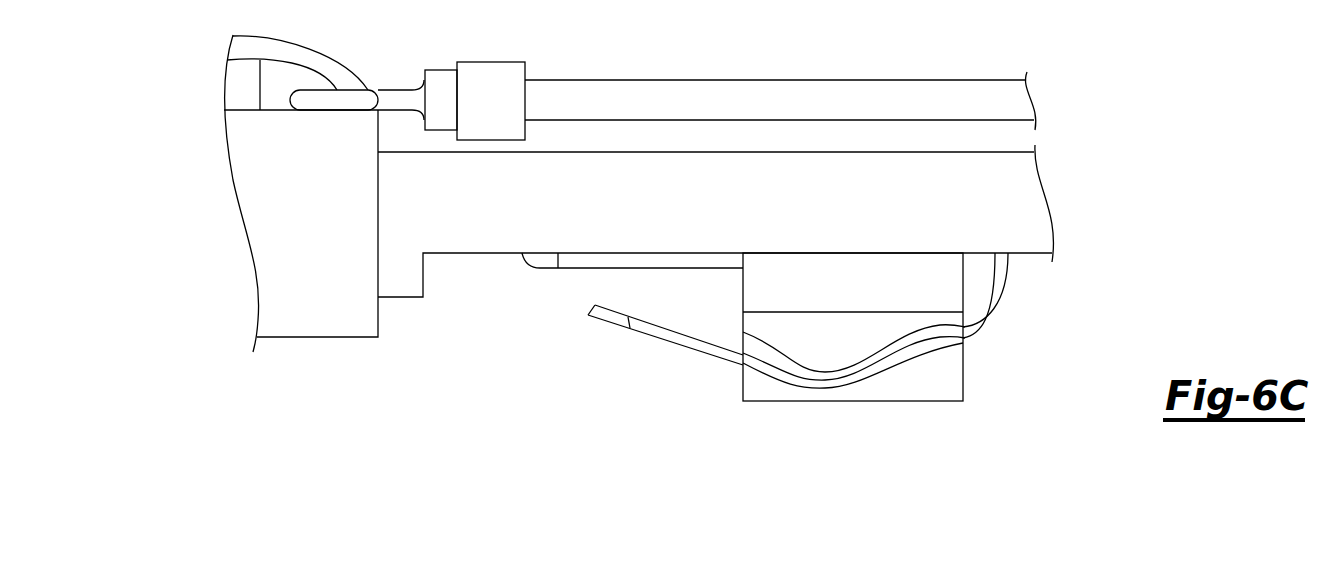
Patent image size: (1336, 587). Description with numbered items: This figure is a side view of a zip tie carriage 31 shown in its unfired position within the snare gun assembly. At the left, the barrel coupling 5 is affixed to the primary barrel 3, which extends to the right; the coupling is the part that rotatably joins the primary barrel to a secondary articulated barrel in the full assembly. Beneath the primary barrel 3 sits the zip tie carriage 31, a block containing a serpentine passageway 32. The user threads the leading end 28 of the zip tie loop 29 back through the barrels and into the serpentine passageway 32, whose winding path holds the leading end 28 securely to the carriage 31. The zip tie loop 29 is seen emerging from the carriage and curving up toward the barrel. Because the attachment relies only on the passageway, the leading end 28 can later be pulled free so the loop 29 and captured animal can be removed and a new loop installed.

The primary barrel 3 is at (478, 254).
The barrel coupling 5 is at (318, 337).
The leading end of the zip tie 28 is at (670, 342).
The zip tie loop 29 is at (1005, 308).
The zip tie carriage 31 is at (850, 402).
The serpentine passageway 32 is at (907, 353).